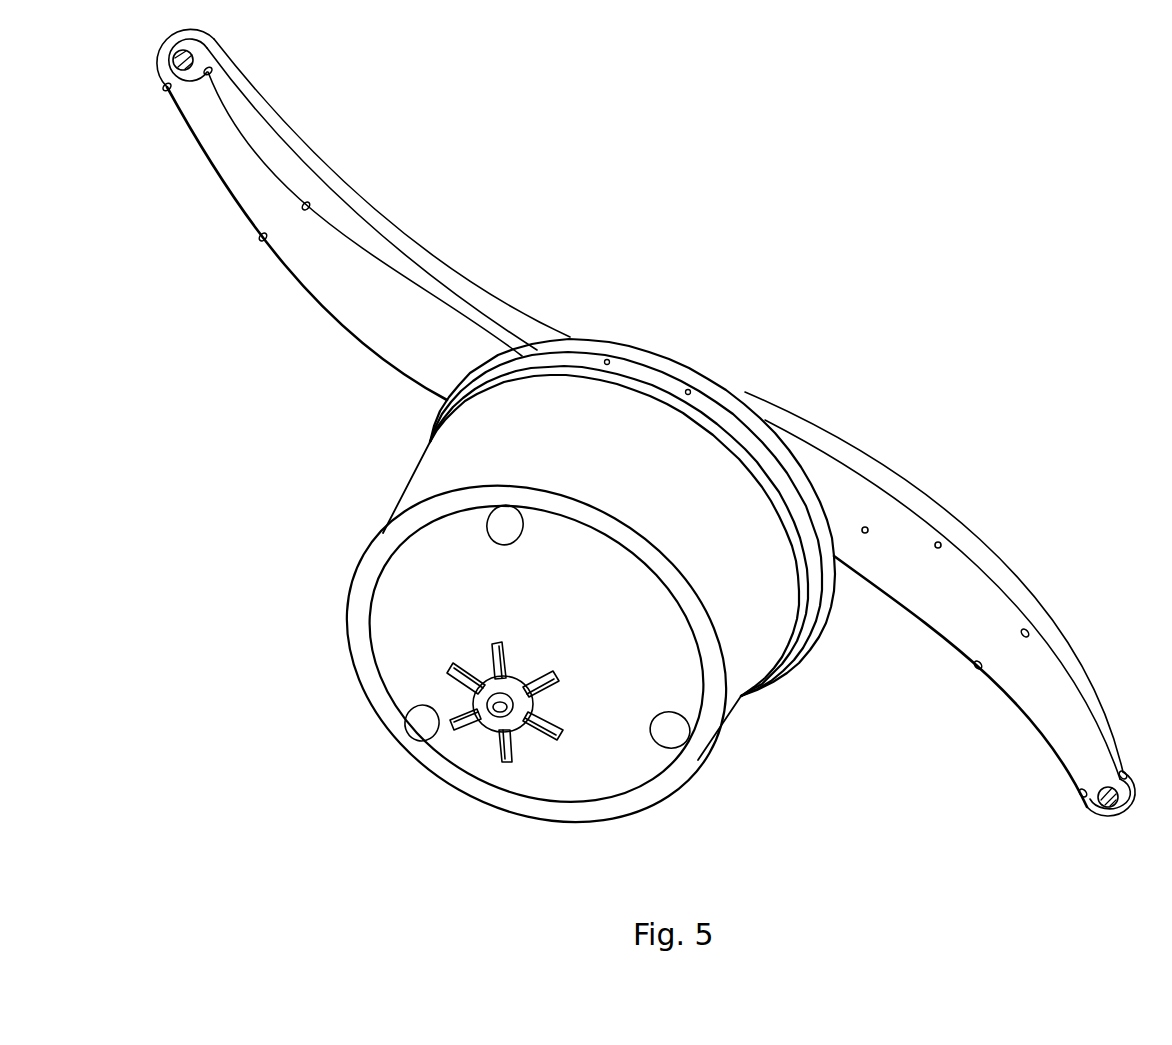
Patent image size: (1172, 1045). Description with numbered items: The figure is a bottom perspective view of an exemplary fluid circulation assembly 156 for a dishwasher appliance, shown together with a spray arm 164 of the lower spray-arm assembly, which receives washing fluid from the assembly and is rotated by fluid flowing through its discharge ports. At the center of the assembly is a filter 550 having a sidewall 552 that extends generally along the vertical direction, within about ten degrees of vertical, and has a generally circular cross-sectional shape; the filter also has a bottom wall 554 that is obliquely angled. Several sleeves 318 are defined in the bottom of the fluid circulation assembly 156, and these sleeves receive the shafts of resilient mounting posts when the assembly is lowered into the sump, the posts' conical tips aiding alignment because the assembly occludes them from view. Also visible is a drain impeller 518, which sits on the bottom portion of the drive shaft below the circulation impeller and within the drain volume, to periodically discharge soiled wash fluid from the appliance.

The fluid circulation assembly 156 is at (764, 300).
The spray arm 164 is at (322, 250).
The sleeve 318 is at (500, 515).
The drain impeller 518 is at (542, 723).
The filter 550 is at (418, 495).
The sidewall 552 is at (683, 495).
The bottom wall 554 is at (590, 647).